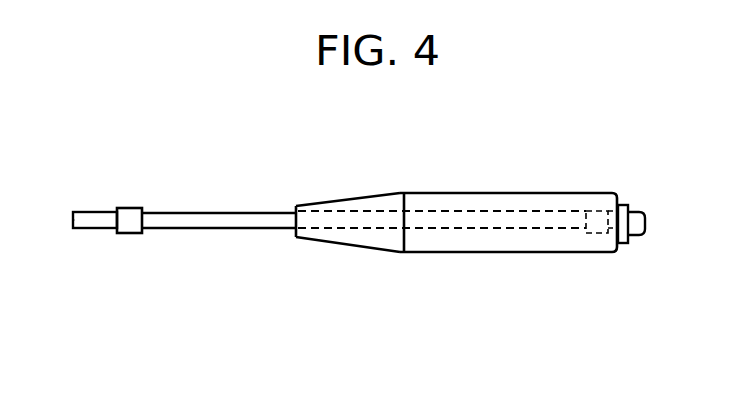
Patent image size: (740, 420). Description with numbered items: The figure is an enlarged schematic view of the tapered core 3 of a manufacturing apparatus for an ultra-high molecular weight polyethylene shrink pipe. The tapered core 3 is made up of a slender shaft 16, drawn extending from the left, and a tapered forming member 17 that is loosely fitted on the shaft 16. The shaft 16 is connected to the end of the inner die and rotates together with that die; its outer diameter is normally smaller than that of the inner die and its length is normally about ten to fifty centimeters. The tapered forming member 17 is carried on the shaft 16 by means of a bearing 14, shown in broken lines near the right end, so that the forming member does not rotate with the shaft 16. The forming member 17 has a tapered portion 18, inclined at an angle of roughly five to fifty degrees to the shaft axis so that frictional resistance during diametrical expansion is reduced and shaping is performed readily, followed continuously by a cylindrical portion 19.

The tapered core 3 is at (383, 255).
The bearing 14 is at (600, 211).
The shaft 16 is at (224, 210).
The tapered forming member 17 is at (490, 194).
The tapered portion 18 is at (374, 203).
The cylindrical portion 19 is at (533, 253).